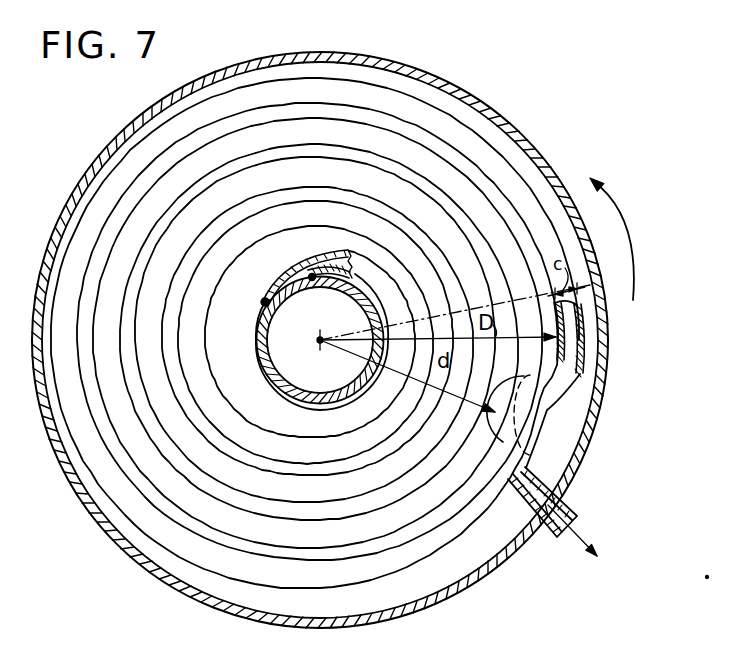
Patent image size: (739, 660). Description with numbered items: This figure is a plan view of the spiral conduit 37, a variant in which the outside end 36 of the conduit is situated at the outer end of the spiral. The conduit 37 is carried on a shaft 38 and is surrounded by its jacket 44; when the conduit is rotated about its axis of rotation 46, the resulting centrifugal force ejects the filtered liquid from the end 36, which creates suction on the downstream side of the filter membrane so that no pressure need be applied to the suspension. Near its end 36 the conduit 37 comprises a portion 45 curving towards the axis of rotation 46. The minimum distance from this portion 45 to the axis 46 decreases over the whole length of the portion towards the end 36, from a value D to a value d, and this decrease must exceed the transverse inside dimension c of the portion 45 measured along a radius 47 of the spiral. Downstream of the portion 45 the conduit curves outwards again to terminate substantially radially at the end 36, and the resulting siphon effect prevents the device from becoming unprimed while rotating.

The jacket 44 is at (466, 96).
The spiral conduit 37 is at (503, 252).
The shaft 38 is at (272, 381).
The axis of rotation 46 is at (320, 339).
The radius of the spiral 47 is at (465, 309).
The portion curving towards the axis of rotation 45 is at (543, 400).
The outside end 36 is at (558, 524).